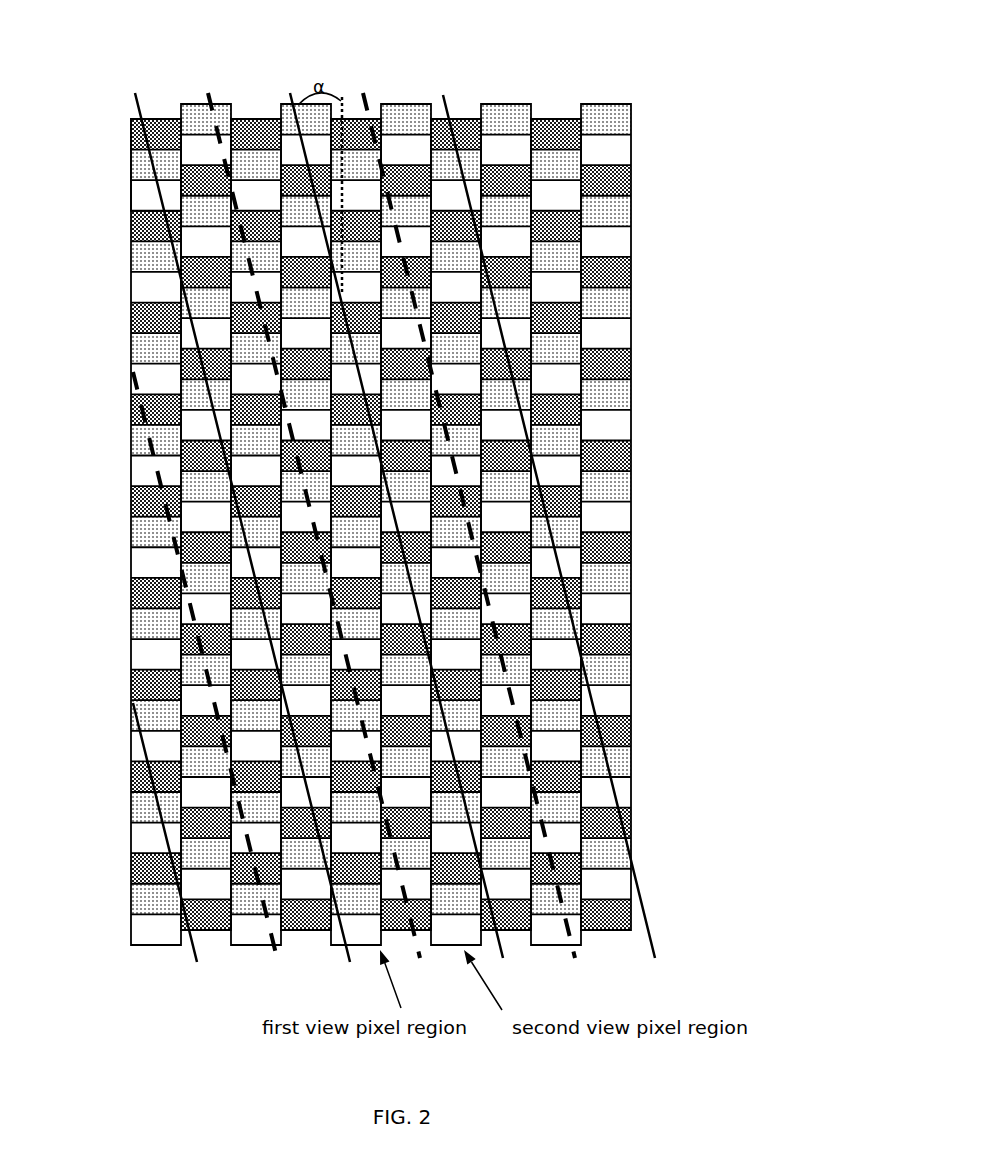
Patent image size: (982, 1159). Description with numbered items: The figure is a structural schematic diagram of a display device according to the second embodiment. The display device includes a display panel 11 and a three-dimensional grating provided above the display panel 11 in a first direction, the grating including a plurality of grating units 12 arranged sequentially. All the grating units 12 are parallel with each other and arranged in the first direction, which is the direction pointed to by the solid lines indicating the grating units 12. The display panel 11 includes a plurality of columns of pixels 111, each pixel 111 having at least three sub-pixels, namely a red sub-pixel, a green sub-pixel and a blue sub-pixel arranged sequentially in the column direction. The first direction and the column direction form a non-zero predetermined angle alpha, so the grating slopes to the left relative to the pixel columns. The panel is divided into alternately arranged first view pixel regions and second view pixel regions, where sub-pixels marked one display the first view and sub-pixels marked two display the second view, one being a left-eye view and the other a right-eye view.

The display panel 11 is at (507, 88).
The grating unit 12 is at (290, 93).
The pixel 111 is at (137, 233).